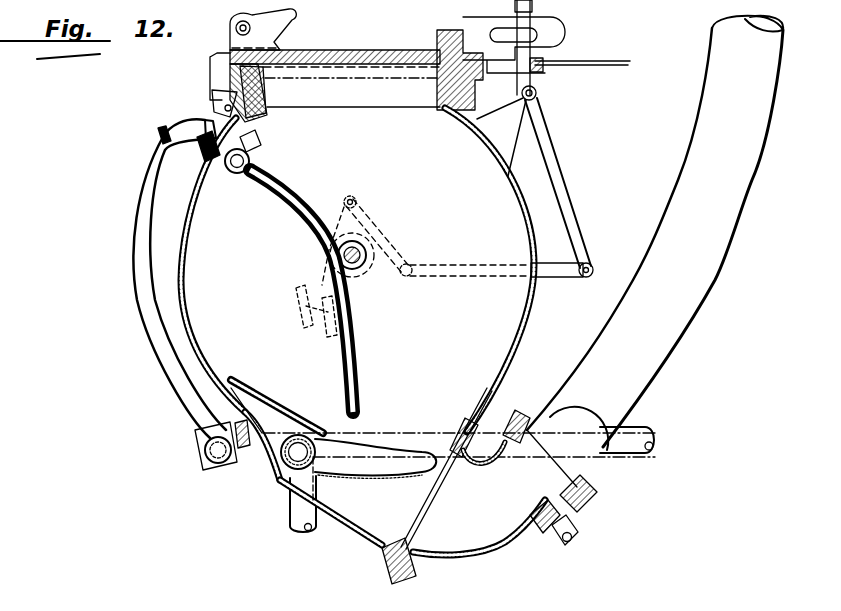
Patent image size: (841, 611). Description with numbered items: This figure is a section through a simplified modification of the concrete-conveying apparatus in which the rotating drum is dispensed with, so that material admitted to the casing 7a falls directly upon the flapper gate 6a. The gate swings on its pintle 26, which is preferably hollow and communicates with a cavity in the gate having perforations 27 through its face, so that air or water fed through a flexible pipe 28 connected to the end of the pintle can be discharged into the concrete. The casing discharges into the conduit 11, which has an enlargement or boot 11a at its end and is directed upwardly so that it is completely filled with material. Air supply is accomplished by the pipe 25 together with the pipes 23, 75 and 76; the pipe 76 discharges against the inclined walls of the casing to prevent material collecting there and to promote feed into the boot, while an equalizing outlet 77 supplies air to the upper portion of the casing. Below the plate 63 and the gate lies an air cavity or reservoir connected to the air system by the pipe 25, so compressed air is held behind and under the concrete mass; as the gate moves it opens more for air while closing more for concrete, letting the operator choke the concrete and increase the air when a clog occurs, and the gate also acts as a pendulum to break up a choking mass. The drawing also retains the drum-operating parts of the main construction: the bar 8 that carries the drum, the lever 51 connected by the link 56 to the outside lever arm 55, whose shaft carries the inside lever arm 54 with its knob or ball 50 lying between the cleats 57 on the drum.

The gate 6a is at (411, 477).
The casing 7a is at (551, 329).
The bar 8 is at (362, 272).
The conduit 11 is at (680, 347).
The boot 11a is at (353, 522).
The pipe 23 is at (159, 354).
The pipe 25 is at (206, 459).
The pintle 26 is at (269, 475).
The perforations 27 is at (421, 452).
The flexible pipe 28 is at (289, 515).
The knob or ball 50 is at (297, 313).
The lever 51 is at (572, 199).
The lever arm 54 is at (397, 257).
The lever arm 55 is at (344, 210).
The link 56 is at (507, 277).
The cleats 57 is at (322, 333).
The plate 63 is at (253, 394).
The pipe 75 is at (231, 175).
The pipe 76 is at (285, 184).
The equalizing outlet 77 is at (258, 145).